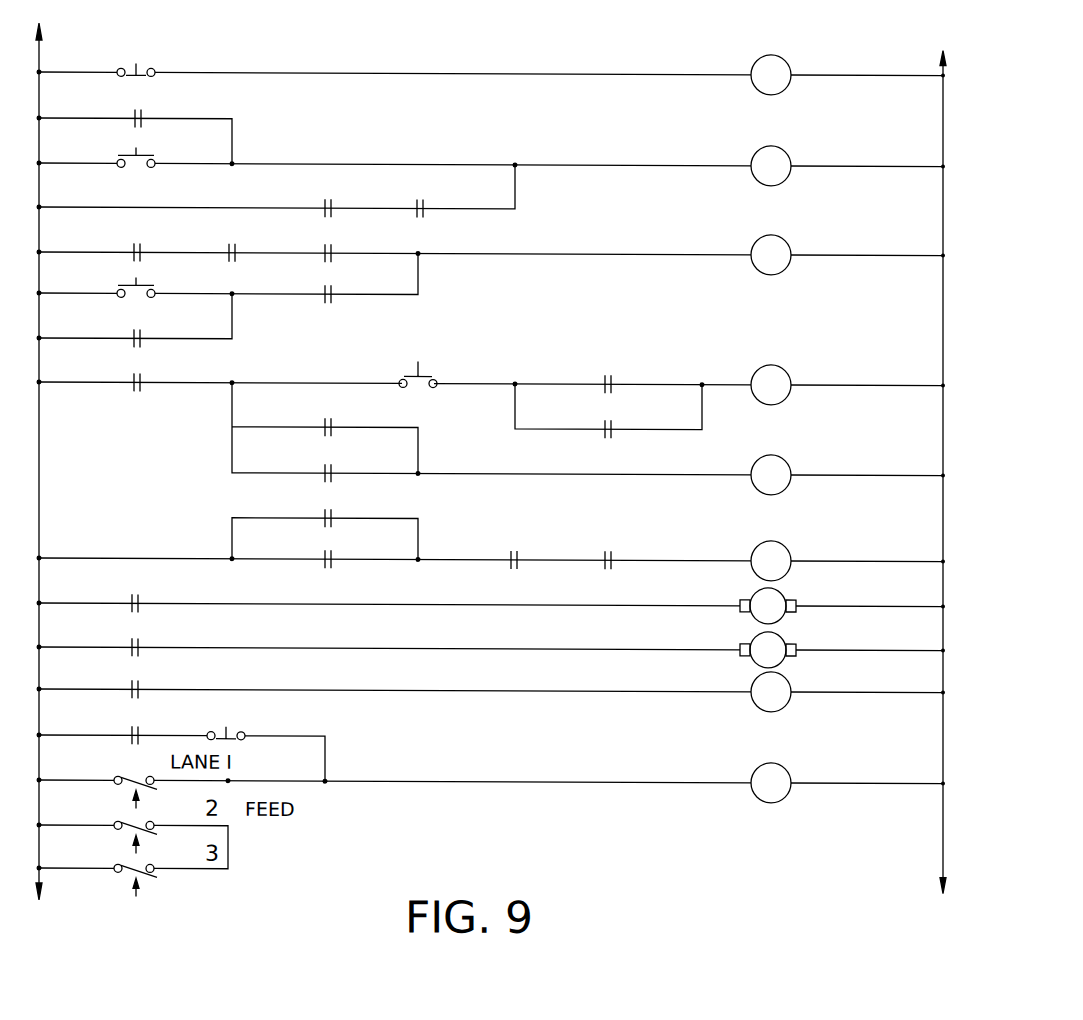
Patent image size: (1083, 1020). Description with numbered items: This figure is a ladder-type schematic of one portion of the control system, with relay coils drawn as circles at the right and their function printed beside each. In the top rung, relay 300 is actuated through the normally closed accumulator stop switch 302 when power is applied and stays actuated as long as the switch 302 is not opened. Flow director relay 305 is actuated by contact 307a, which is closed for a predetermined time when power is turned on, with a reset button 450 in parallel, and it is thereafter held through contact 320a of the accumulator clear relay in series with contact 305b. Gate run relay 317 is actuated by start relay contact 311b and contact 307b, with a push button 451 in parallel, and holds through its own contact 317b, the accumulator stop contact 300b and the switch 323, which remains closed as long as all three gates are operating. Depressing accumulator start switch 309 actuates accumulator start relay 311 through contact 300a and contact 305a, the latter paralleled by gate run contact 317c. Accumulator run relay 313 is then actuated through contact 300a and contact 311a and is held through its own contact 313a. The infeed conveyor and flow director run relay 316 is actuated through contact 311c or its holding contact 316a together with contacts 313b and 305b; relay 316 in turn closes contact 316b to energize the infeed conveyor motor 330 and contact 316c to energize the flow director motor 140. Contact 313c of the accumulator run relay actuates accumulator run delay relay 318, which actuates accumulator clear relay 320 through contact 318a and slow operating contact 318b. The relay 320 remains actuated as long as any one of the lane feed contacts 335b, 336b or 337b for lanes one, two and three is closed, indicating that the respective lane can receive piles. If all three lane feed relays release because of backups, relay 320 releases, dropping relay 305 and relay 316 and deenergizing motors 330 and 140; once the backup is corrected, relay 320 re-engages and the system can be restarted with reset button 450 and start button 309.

The accumulator stop switch 302 is at (143, 67).
The contact of switch 307 307a is at (143, 118).
The reset button 450 is at (141, 151).
The contact of accumulator clear relay 320 320a is at (333, 204).
The contact of flow director relay 305 305b is at (426, 204).
The gate switch 323 is at (142, 250).
The accumulator stop contact 300b is at (237, 249).
The holding contact of gate run relay 317 317b is at (333, 251).
The push button 451 is at (140, 283).
The contact of start relay 311 311b is at (333, 292).
The contact of switch 307 307b is at (142, 337).
The contact of relay 300 300a is at (142, 380).
The accumulator start switch 309 is at (404, 377).
The contact of flow director relay 305 305a is at (614, 383).
The contact of gate run relay 317 317c is at (614, 428).
The contact of start relay 311 311a is at (333, 424).
The holding contact of accumulator run relay 313 313a is at (334, 473).
The contact of start relay 311 311c is at (334, 519).
The holding contact of run relay 316 316a is at (334, 561).
The contact of accumulator run relay 313 313b is at (519, 560).
The contact of run relay 316 316b is at (129, 599).
The contact of run relay 316 316c is at (129, 643).
The contact of accumulator run relay 313 313c is at (129, 686).
The contact of accumulator run delay relay 318 318a is at (129, 730).
The slow operating contact of relay 318 318b is at (227, 727).
The contact of lane feed relay 335 335b is at (117, 776).
The contact of lane feed relay 336 336b is at (117, 821).
The contact of lane feed relay 337 337b is at (117, 864).
The relay 300 is at (756, 65).
The flow director relay 305 is at (756, 156).
The gate run relay 317 is at (756, 247).
The accumulator start relay 311 is at (786, 396).
The accumulator run relay 313 is at (786, 486).
The infeed conveyor and flow director run relay 316 is at (786, 571).
The infeed conveyor motor 330 is at (784, 615).
The flow director motor 140 is at (784, 660).
The accumulator run delay relay 318 is at (786, 703).
The accumulator clear relay 320 is at (786, 793).